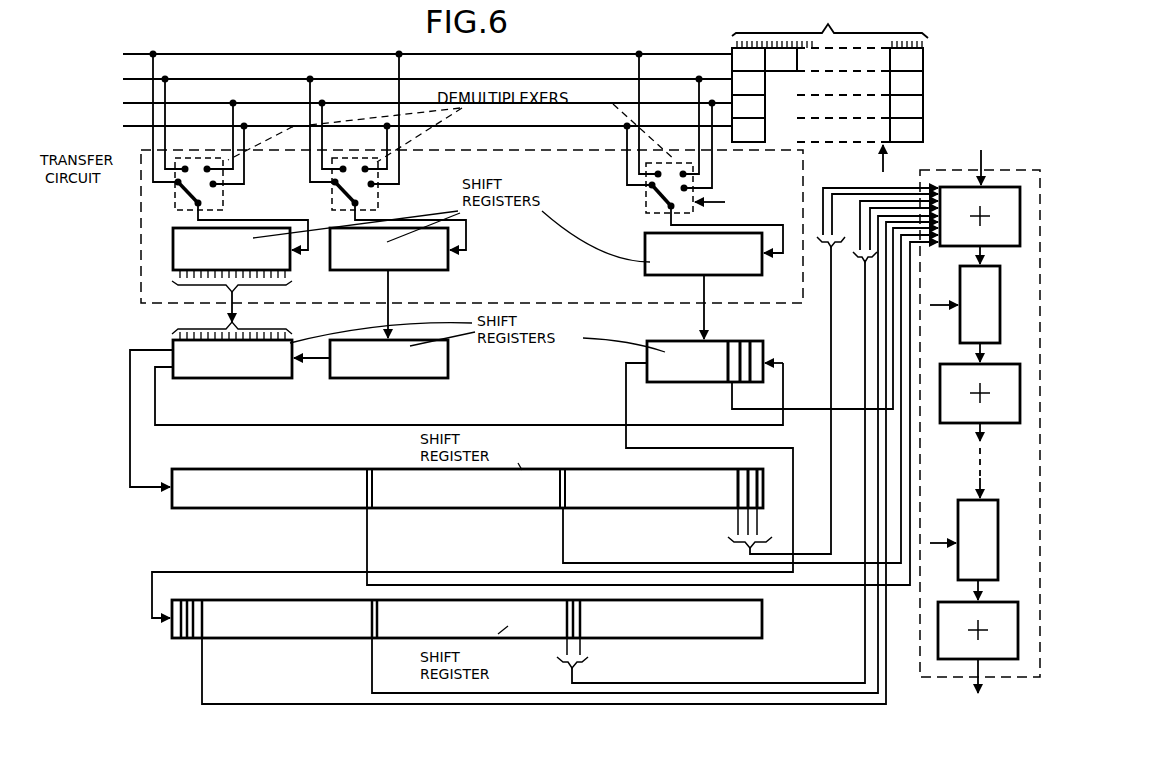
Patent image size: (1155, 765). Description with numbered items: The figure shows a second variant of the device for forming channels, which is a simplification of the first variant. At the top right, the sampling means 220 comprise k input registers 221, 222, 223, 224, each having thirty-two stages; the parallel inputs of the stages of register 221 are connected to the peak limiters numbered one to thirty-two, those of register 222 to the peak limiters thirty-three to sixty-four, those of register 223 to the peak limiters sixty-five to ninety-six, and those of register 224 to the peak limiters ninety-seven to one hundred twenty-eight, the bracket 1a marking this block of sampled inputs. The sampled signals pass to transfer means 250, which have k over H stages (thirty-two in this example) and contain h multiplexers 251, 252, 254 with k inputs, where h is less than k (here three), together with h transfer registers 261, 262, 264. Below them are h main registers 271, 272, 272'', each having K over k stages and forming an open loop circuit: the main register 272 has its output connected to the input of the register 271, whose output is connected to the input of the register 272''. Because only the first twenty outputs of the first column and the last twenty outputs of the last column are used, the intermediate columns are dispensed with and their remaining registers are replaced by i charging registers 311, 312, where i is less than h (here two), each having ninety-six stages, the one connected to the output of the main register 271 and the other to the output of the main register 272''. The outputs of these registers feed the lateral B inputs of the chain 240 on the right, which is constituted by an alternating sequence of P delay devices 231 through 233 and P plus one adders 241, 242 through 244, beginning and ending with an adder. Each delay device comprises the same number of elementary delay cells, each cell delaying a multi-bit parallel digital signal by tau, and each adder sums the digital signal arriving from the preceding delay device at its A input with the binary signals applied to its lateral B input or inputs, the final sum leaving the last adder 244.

The sampling circuit cells 1a is at (830, 19).
The sampling means 220 is at (906, 95).
The input register 221 is at (925, 60).
The input register 222 is at (925, 84).
The input register 223 is at (925, 108).
The input register 224 is at (925, 132).
The chain 240 is at (1009, 421).
The adder 241 is at (1010, 228).
The delay device 231 is at (986, 314).
The adder 242 is at (1003, 398).
The delay device 233 is at (985, 535).
The adder 244 is at (1003, 633).
The transfer means 250 is at (141, 241).
The multiplexer 251 is at (223, 203).
The multiplexer 252 is at (378, 203).
The multiplexer 254 is at (644, 202).
The transfer register 261 is at (276, 253).
The transfer register 262 is at (420, 253).
The transfer register 264 is at (700, 252).
The main register 271 is at (272, 357).
The main register 272 is at (371, 375).
The main register 272'' is at (545, 423).
The charging register 311 is at (262, 468).
The charging register 312 is at (262, 640).